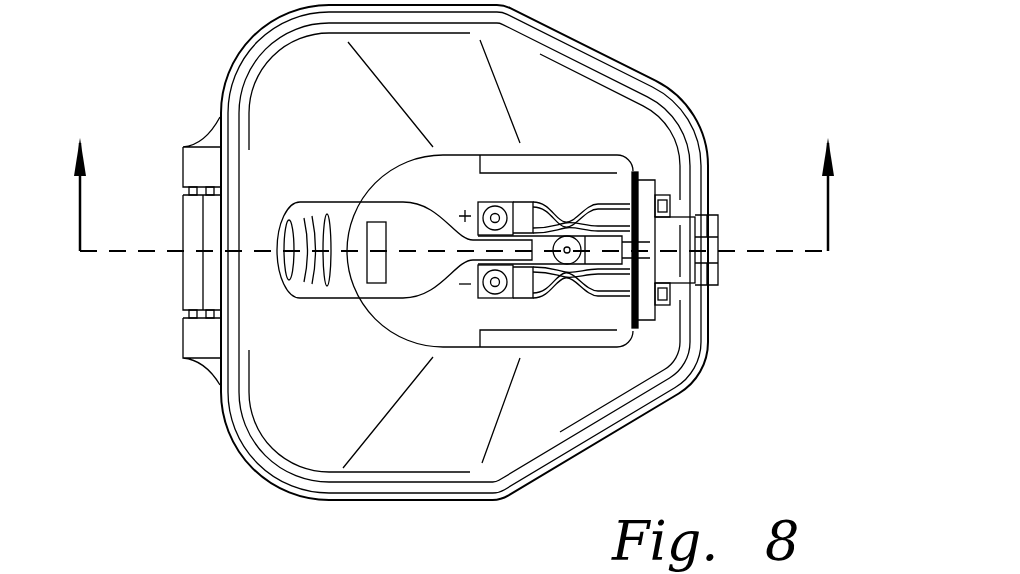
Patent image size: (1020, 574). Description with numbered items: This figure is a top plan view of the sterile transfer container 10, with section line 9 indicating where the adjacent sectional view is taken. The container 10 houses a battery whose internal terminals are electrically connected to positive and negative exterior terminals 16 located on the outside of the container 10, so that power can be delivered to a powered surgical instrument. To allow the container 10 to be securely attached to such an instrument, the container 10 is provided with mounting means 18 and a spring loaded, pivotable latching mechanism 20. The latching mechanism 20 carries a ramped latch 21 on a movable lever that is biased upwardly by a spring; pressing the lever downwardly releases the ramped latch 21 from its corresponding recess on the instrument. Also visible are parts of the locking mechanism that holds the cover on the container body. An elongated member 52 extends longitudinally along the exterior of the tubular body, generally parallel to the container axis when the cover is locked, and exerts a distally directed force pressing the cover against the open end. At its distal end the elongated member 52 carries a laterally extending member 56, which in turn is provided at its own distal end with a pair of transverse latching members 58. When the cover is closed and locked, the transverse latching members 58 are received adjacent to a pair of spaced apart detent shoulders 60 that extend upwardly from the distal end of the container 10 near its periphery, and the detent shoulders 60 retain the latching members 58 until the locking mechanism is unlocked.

The section line 9- 9 is at (472, 181).
The sterile transfer container 10 is at (243, 43).
The exterior terminals 16 is at (610, 197).
The mounting means 18 is at (570, 320).
The latching mechanism 20 is at (318, 297).
The ramped latch 21 is at (380, 285).
The elongated member 52 is at (706, 240).
The laterally extending member 56 is at (672, 260).
The transverse latching members 58 is at (650, 180).
The detent shoulders 60 is at (662, 197).